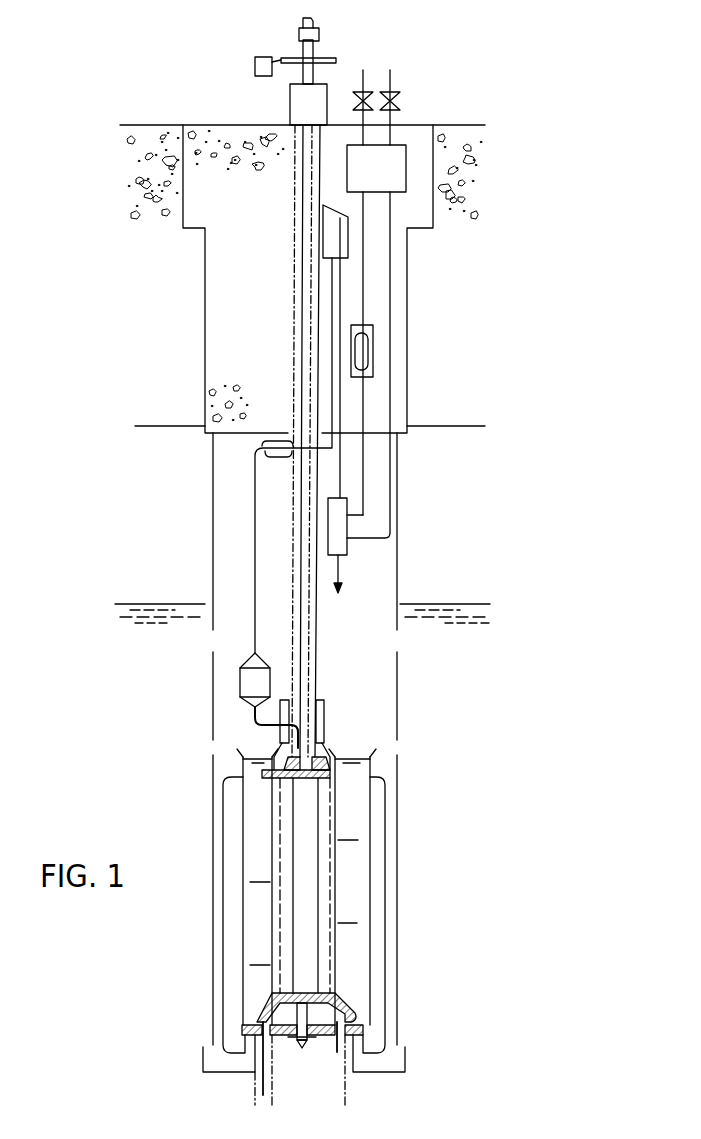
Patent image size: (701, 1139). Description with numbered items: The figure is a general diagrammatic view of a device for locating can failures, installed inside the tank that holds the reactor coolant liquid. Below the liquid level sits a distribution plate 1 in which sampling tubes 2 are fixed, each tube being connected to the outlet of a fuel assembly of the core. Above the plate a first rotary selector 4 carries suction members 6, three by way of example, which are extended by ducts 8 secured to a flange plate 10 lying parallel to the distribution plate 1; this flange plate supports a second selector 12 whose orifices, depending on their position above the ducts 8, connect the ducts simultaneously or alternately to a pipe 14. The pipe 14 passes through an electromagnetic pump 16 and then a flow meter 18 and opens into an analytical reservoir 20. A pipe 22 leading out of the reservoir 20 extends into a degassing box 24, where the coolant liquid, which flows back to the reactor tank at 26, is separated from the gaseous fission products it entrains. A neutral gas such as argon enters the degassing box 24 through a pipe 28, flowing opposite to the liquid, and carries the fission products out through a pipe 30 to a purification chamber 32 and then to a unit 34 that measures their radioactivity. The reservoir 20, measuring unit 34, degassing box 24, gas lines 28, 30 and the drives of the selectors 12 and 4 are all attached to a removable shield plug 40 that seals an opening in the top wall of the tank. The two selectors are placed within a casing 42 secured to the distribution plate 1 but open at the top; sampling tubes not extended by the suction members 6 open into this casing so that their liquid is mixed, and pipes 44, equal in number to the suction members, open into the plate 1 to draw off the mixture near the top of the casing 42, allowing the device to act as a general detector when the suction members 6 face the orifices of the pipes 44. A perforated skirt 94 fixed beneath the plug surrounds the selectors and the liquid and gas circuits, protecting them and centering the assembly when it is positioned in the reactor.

The distribution plate 1 is at (337, 1052).
The sampling tubes 2 is at (258, 1071).
The first rotary selector 4 is at (342, 948).
The suction members 6 is at (352, 1008).
The ducts 8 is at (318, 893).
The flange plate 10 is at (324, 780).
The second selector 12 is at (320, 758).
The pipe 14 is at (255, 727).
The electromagnetic pump 16 is at (248, 685).
The flow meter 18 is at (272, 436).
The analytical reservoir 20 is at (330, 238).
The pipe 22 is at (340, 272).
The degassing box 24 is at (341, 549).
The coolant return 26 is at (338, 570).
The pipe 28 is at (390, 383).
The pipe 30 is at (363, 463).
The purification chamber 32 is at (362, 340).
The measuring unit 34 is at (400, 150).
The removable shield plug 40 is at (252, 216).
The casing 42 is at (370, 852).
The pipes 44 is at (387, 800).
The perforated skirt 94 is at (213, 563).